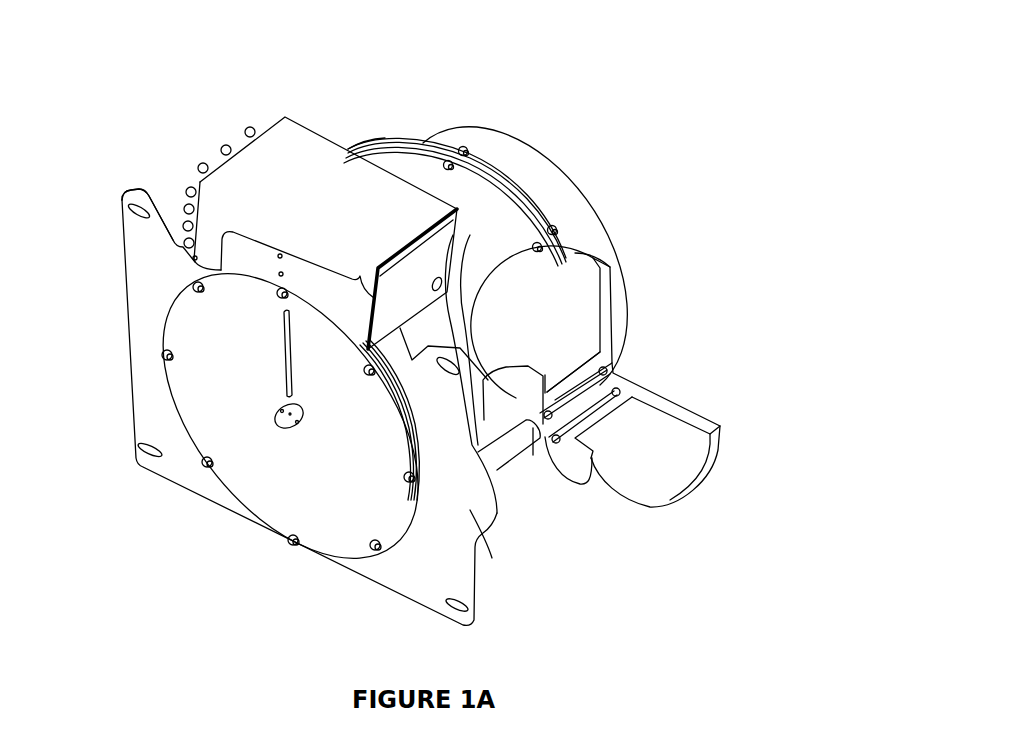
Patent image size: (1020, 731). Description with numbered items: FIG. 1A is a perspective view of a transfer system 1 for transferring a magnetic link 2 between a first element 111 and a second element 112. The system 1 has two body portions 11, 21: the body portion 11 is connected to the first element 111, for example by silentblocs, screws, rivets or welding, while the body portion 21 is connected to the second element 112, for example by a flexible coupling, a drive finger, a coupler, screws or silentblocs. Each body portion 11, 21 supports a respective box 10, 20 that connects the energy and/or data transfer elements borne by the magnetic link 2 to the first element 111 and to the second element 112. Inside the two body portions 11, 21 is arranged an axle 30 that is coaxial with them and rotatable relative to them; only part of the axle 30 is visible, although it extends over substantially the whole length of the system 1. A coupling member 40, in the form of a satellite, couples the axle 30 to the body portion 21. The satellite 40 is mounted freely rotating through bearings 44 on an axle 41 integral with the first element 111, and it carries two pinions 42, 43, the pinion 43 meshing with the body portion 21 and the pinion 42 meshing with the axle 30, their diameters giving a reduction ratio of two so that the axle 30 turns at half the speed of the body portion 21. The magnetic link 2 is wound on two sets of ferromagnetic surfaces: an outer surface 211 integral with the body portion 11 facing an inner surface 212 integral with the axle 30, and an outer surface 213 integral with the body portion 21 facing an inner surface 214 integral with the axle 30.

The transfer system 1 is at (106, 138).
The box 10 is at (280, 155).
The body portion 11 is at (258, 500).
The first element 111 is at (283, 417).
The second element 112 is at (377, 143).
The magnetic link 2 is at (464, 151).
The box 20 is at (562, 184).
The body portion 21 is at (410, 160).
The outer surface 211 is at (287, 523).
The inner surface 212 is at (463, 337).
The outer surface 213 is at (423, 147).
The inner surface 214 is at (473, 355).
The axle 30 is at (458, 318).
The coupling member 40 is at (623, 514).
The axle 41 is at (520, 477).
The pinion 42 is at (567, 493).
The pinion 43 is at (702, 482).
The bearings 44 is at (630, 383).